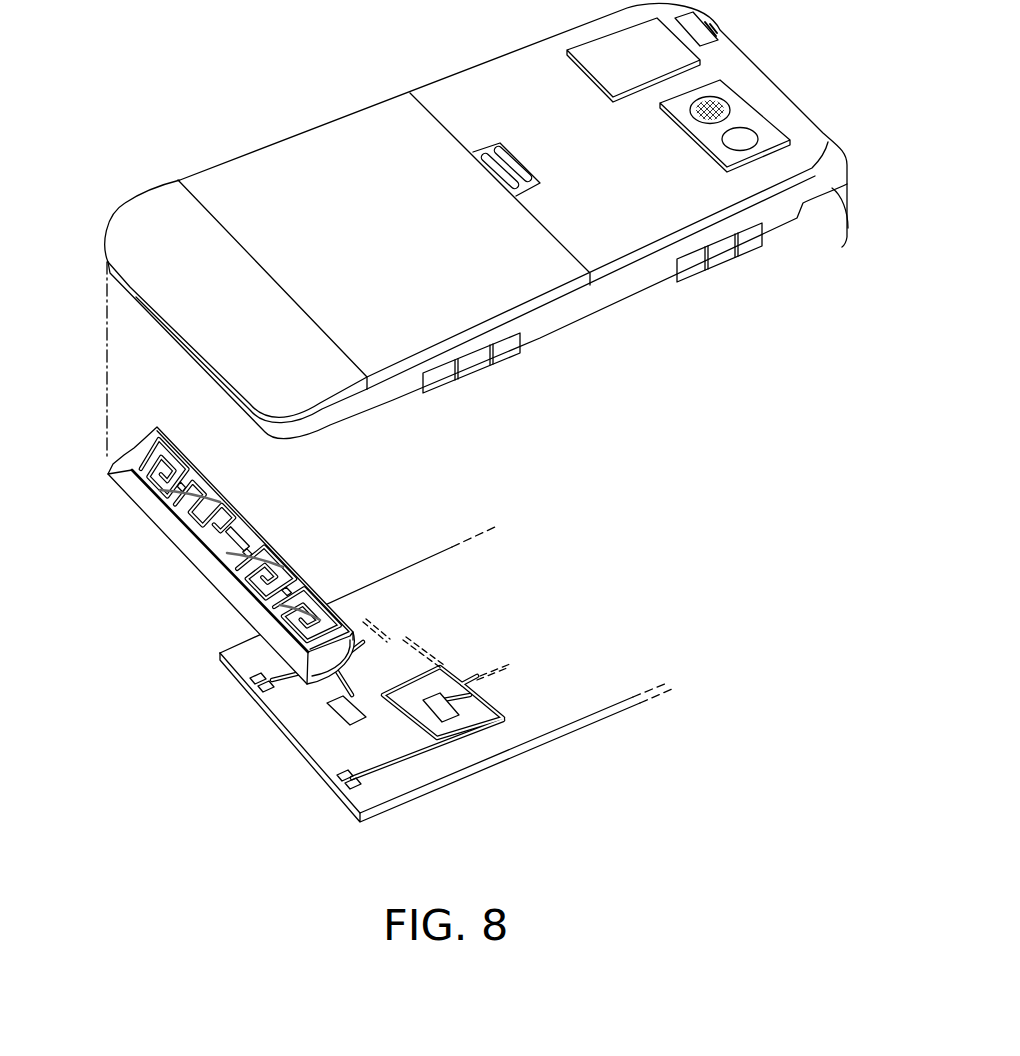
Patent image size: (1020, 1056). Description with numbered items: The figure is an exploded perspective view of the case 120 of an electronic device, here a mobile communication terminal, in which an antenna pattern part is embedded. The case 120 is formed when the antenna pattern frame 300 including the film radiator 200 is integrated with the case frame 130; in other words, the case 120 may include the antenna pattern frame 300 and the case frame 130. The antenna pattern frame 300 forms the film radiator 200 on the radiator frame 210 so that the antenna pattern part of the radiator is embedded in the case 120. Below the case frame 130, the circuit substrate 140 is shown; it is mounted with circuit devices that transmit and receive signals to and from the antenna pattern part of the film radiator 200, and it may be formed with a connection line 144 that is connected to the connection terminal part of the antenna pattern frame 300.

The case 120 is at (454, 220).
The case frame 130 is at (127, 210).
The circuit substrate 140 is at (412, 674).
The connection line 144 is at (250, 676).
The film radiator 200 is at (187, 555).
The radiator frame 210 is at (113, 475).
The antenna pattern frame 300 is at (235, 555).